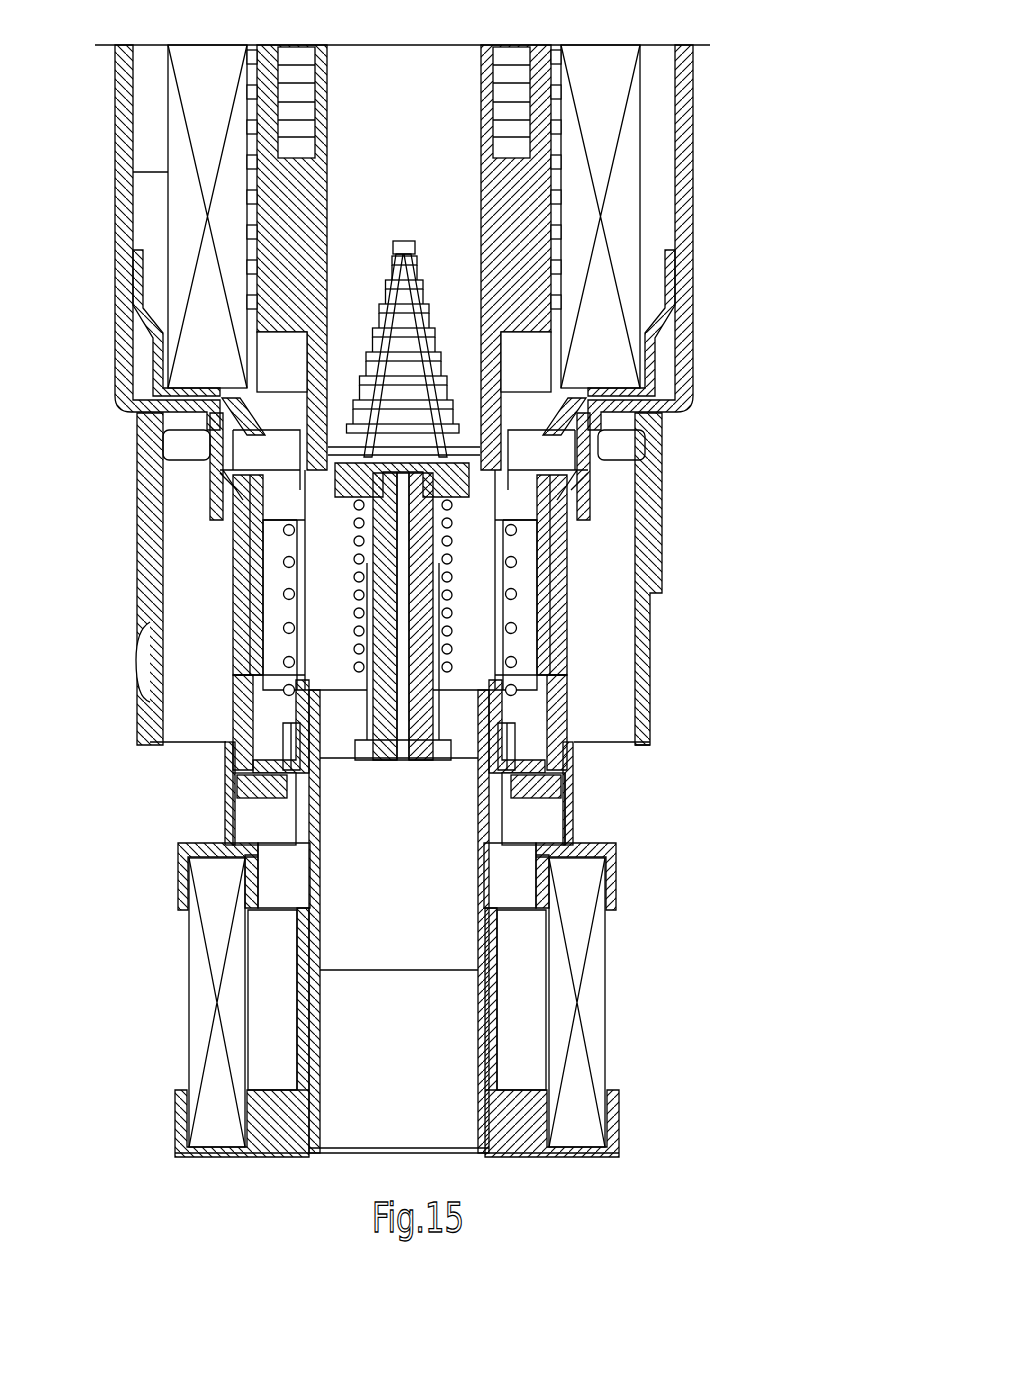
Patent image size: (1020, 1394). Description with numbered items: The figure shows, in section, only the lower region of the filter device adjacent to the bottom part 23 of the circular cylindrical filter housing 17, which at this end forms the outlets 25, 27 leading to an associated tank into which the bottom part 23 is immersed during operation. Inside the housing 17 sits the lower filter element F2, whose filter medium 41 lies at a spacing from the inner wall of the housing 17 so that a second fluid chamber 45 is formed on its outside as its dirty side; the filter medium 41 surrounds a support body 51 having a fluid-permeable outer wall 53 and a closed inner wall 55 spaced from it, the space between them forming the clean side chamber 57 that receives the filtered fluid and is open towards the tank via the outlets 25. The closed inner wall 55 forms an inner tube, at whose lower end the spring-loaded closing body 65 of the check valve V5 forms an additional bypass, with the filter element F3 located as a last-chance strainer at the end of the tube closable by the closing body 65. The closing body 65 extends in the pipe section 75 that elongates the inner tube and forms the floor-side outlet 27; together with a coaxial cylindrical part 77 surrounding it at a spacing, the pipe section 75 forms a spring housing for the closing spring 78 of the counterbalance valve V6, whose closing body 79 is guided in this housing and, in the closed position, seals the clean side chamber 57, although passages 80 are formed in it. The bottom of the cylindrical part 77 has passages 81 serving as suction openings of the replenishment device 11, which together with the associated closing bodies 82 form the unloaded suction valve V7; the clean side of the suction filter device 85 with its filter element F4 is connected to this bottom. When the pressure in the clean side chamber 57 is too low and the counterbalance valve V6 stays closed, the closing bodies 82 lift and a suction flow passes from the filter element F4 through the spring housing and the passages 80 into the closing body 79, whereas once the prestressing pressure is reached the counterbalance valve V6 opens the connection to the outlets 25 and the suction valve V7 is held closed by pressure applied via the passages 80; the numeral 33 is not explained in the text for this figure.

The replenishment device 11 is at (624, 820).
The filter housing 17 is at (692, 97).
The bottom part 23 is at (155, 680).
The outlets 25 is at (210, 514).
The floor-side outlet 27 is at (317, 937).
The flange 33 is at (650, 322).
The filter medium 41 is at (602, 191).
The second fluid chamber 45 is at (662, 126).
The support body 51 is at (290, 258).
The fluid-permeable outer wall 53 is at (563, 246).
The closed inner wall 55 is at (335, 297).
The clean side chamber 57 is at (290, 113).
The closing body 65 is at (447, 477).
The pipe section 75 is at (283, 610).
The cylindrical part 77 is at (557, 690).
The closing spring 78 is at (284, 633).
The closing body 79 is at (592, 478).
The passages 80 is at (288, 520).
The passages 81 is at (310, 778).
The closing bodies 82 is at (290, 747).
The suction filter device 85 is at (162, 1024).
The filter element F2 is at (168, 172).
The filter element F3 is at (378, 268).
The filter element F4 is at (238, 1000).
The check valve V5 is at (333, 522).
The counterbalance valve V6 is at (560, 515).
The suction valve V7 is at (220, 765).